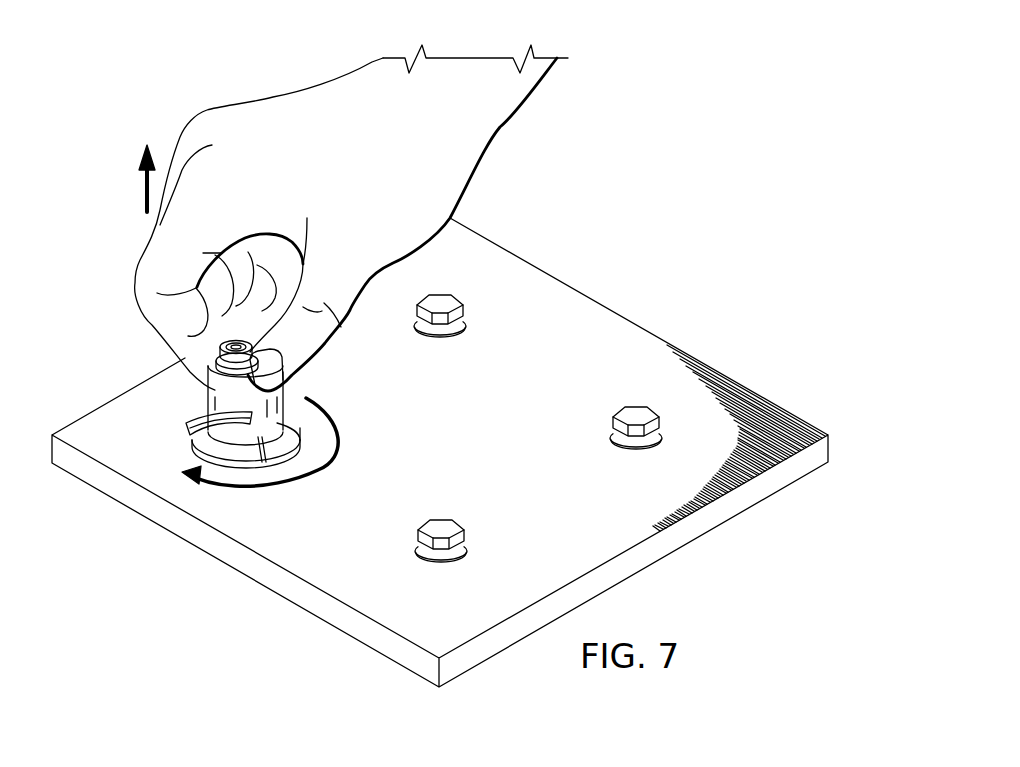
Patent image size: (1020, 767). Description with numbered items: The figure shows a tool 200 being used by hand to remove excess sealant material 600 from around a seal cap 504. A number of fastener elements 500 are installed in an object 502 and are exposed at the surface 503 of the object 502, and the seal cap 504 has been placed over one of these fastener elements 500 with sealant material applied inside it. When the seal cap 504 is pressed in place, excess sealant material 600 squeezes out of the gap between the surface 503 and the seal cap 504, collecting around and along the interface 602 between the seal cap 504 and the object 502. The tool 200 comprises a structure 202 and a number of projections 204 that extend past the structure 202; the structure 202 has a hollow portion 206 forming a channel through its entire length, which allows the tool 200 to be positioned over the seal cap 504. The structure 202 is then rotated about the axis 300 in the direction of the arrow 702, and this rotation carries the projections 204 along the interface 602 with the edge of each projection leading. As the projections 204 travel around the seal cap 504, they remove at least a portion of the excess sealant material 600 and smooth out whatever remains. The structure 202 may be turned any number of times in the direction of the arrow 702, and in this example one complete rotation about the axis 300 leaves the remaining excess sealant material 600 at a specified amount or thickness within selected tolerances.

The tool 200 is at (221, 366).
The structure 202 is at (207, 388).
The number of projections 204 is at (168, 427).
The hollow portion 206 is at (240, 336).
The axis 300 is at (146, 180).
The number of fastener elements 500 is at (473, 308).
The object 502 is at (440, 452).
The surface 503 is at (460, 430).
The seal cap 504 is at (241, 452).
The excess sealant material 600 is at (190, 443).
The interface 602 is at (316, 440).
The arrow 702 is at (309, 472).